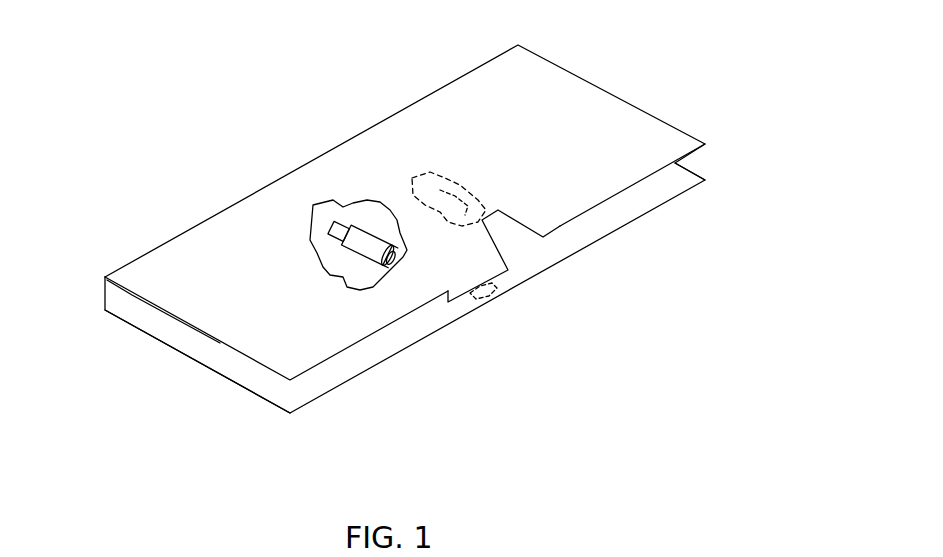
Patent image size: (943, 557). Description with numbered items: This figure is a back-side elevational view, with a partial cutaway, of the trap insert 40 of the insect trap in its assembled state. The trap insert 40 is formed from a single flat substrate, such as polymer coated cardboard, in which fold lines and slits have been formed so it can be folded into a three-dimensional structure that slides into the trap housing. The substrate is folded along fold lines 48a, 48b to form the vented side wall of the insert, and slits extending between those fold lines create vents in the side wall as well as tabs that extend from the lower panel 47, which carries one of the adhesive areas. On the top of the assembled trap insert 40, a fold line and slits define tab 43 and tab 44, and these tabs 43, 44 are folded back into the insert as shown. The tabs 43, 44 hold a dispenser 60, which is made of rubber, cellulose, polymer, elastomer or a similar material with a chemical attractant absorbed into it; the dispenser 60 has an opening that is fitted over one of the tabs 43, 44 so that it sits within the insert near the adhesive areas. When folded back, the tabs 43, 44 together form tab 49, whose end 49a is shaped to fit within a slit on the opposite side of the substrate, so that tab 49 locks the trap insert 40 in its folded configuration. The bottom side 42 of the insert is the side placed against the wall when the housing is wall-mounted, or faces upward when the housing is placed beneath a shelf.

The trap insert 40 is at (409, 250).
The bottom side 42 is at (236, 397).
The tab 43 is at (387, 279).
The tab 44 is at (487, 196).
The lower panel 47 is at (684, 190).
The fold line 48a is at (127, 253).
The fold line 48b is at (109, 294).
The tab 49 is at (548, 292).
The end 49a is at (499, 301).
The dispenser 60 is at (358, 282).